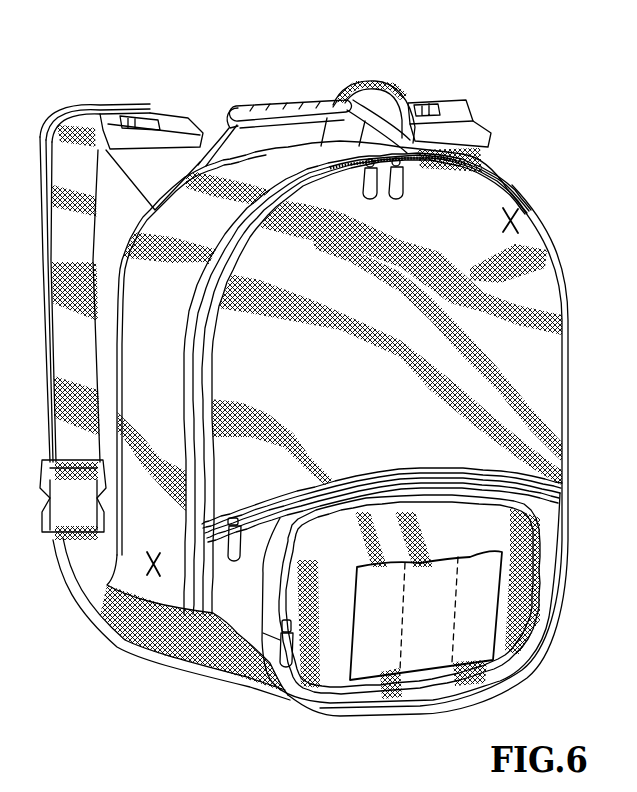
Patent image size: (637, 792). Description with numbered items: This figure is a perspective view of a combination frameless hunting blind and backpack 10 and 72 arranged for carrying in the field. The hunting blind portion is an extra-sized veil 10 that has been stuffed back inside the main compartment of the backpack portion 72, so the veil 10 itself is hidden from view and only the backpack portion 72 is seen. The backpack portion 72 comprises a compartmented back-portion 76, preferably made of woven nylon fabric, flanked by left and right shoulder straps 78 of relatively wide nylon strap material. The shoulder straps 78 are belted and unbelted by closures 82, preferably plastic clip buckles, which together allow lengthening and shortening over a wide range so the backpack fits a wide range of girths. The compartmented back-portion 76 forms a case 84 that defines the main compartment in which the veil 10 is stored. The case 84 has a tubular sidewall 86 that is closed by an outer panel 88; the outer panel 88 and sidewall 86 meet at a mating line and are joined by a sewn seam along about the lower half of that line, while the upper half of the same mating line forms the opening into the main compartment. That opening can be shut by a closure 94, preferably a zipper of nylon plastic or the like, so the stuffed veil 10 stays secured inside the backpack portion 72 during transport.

The veil 10 is at (163, 67).
The backpack portion 72 is at (270, 97).
The shoulder straps 78 is at (40, 138).
The closures 82 is at (43, 513).
The case 84 is at (522, 208).
The outer panel 88 is at (510, 220).
The closure 94 is at (413, 186).
The compartmented back-portion 76 is at (150, 567).
The tubular sidewall 86 is at (171, 619).